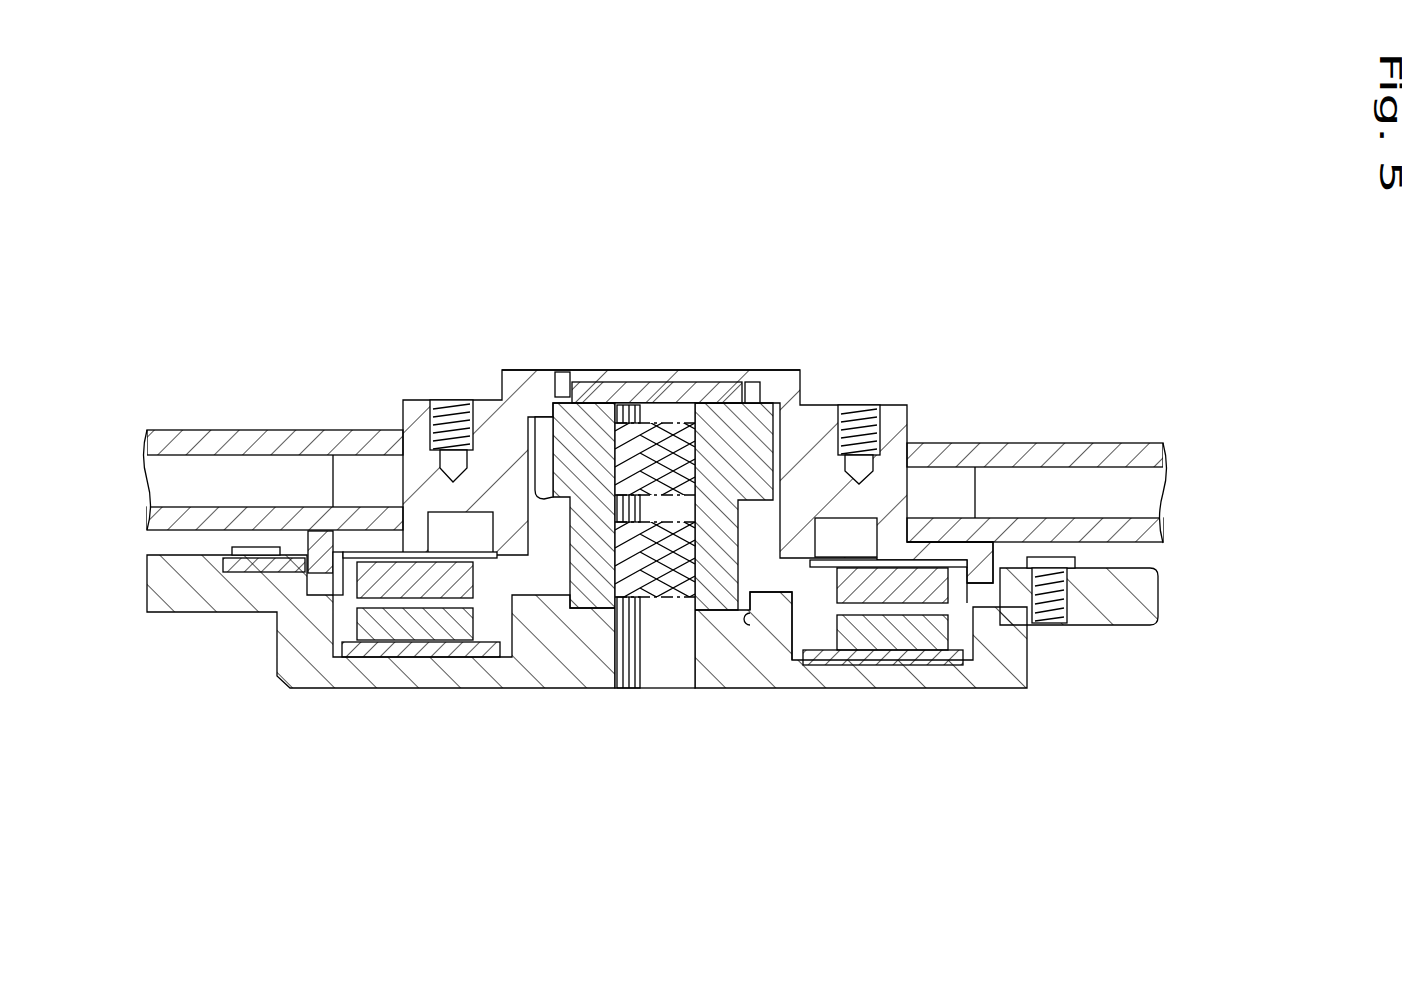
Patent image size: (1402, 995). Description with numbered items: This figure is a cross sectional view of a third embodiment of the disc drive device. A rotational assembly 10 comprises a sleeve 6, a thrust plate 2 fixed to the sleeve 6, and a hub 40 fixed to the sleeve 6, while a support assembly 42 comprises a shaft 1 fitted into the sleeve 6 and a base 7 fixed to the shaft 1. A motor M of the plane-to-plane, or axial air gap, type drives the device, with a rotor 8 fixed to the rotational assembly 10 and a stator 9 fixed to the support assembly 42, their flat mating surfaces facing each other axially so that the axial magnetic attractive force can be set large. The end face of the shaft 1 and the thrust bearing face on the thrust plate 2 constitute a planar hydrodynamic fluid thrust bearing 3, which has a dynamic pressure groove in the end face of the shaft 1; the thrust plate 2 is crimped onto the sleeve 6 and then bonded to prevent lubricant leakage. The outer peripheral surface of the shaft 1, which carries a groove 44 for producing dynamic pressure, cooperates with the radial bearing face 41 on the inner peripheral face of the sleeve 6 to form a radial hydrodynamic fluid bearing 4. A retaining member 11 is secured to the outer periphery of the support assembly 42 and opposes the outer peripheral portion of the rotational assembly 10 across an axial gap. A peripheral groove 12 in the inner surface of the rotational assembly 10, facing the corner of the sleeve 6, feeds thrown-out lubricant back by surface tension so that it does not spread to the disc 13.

The shaft 1 is at (632, 689).
The thrust plate 2 is at (610, 392).
The thrust bearing 3 is at (670, 388).
The radial hydrodynamic fluid bearing 4 is at (678, 574).
The sleeve 6 is at (750, 428).
The base 7 is at (1130, 626).
The rotor 8 is at (358, 594).
The stator 9 is at (410, 626).
The rotational assembly 10 is at (910, 405).
The retaining member 11 is at (1023, 607).
The peripheral groove 12 is at (544, 418).
The disc 13 is at (162, 530).
The hub 40 is at (413, 405).
The radial bearing face 41 is at (758, 615).
The support assembly 42 is at (885, 497).
The groove 44 is at (701, 568).
The motor M is at (408, 777).